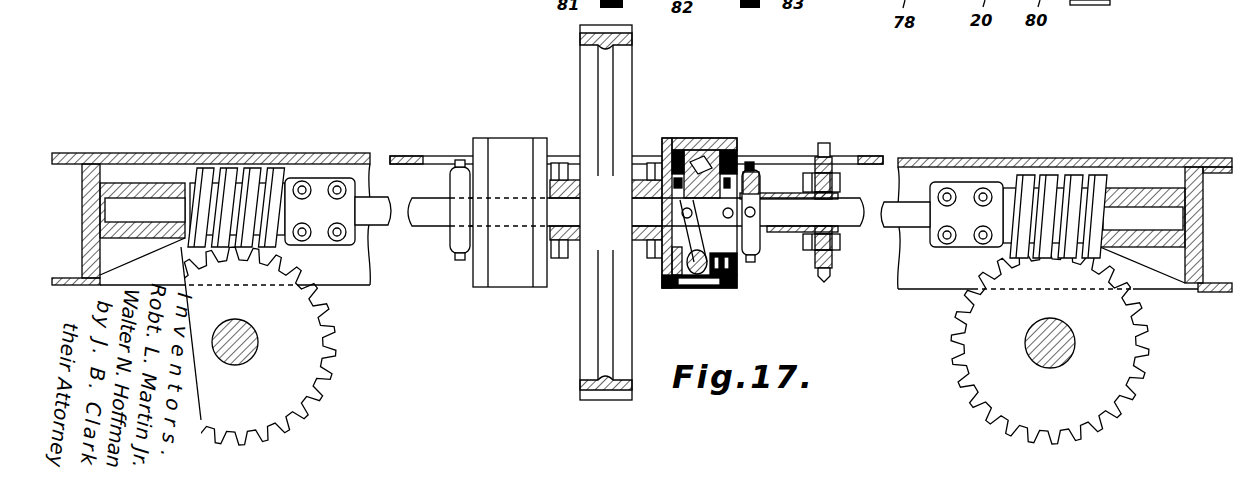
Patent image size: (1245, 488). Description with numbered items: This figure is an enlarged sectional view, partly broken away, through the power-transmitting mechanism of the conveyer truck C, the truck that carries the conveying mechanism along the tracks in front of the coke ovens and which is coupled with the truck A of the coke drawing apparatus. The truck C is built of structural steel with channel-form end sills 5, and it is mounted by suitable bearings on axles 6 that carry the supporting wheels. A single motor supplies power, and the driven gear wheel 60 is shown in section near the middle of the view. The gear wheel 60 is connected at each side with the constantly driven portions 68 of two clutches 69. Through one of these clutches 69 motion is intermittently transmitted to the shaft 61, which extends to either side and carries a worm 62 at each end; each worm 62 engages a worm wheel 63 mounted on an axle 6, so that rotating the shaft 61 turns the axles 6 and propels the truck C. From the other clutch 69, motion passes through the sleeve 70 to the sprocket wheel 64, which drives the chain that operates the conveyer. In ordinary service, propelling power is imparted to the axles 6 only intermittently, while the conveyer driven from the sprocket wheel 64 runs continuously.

The end sill 5 is at (82, 208).
The axle 6 is at (258, 341).
The driven gear wheel 60 is at (623, 67).
The shaft 61 is at (636, 212).
The worm 62 is at (228, 170).
The worm wheel 63 is at (1003, 366).
The sprocket wheel 64 is at (824, 283).
The constantly driven clutch portion 68 is at (552, 155).
The clutch 69 is at (701, 134).
The sleeve 70 is at (777, 196).
The truck A is at (357, 270).
The truck C is at (1128, 164).